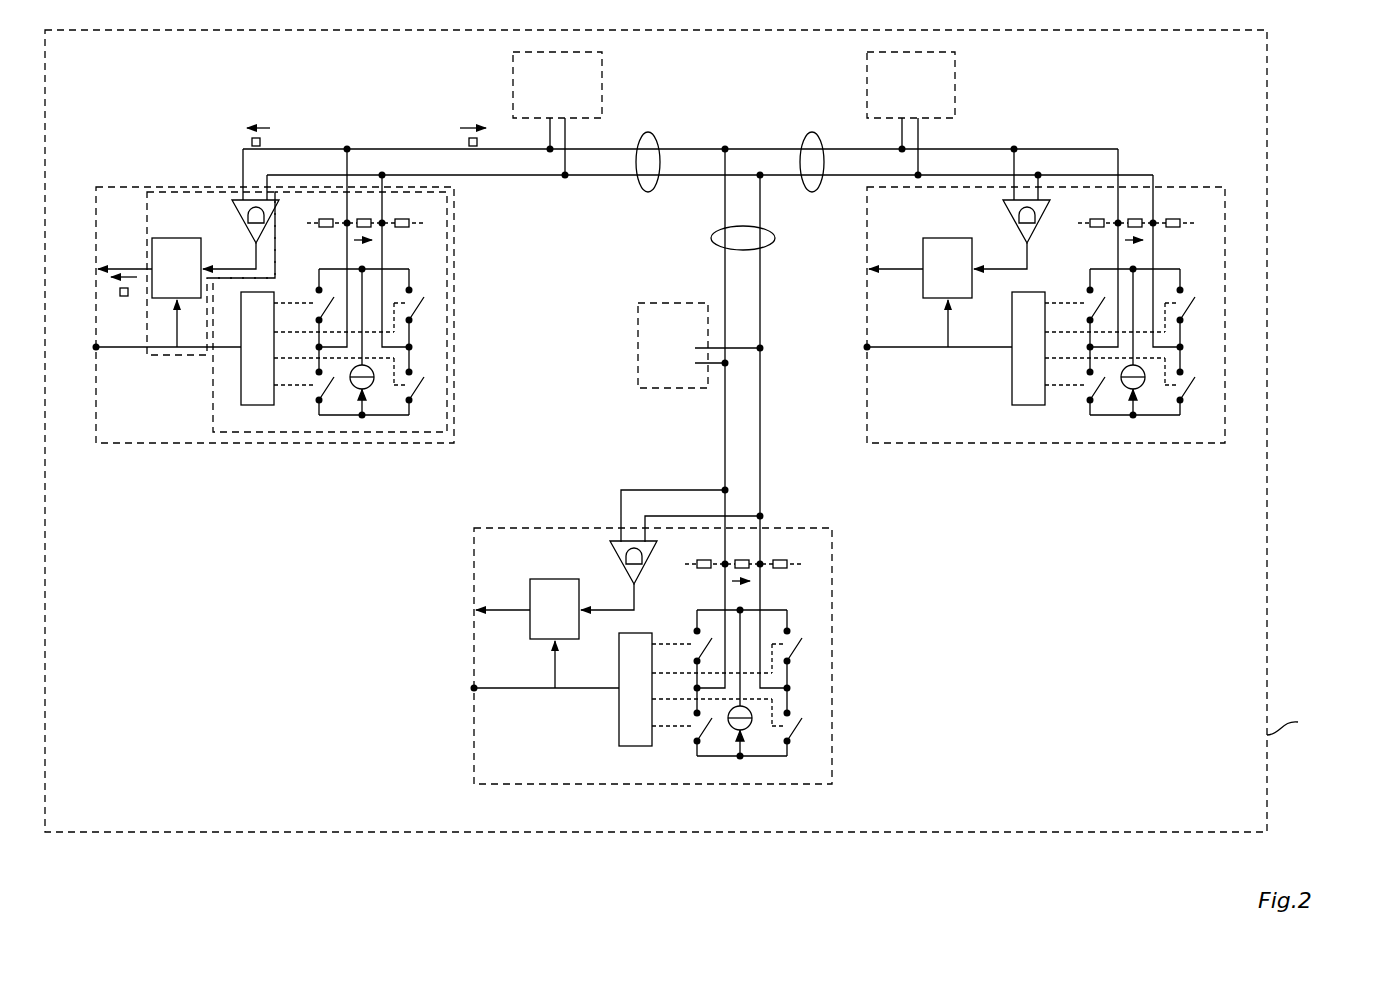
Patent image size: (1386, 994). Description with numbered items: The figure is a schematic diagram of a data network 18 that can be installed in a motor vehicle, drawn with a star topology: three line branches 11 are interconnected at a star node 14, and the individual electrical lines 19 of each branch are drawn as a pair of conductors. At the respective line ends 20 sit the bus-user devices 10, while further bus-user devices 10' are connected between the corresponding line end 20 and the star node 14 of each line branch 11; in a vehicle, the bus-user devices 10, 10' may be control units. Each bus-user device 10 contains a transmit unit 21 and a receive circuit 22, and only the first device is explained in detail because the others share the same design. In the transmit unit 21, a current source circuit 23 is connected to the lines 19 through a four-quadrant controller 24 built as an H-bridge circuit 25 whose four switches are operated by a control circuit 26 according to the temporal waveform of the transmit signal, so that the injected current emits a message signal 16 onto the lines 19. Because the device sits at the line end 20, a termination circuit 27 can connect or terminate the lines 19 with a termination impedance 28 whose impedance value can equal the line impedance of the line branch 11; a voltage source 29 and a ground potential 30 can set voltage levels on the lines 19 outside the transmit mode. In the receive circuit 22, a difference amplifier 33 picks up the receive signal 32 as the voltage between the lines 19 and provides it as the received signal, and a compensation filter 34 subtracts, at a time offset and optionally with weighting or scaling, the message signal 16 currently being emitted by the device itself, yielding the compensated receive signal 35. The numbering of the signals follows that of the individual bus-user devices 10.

The bus-user device 10 is at (639, 463).
The bus-user device 10' is at (769, 225).
The line branch 11 is at (643, 192).
The star node 14 is at (760, 175).
The message signal 16 is at (468, 142).
The data network 18 is at (133, 92).
The electrical line 19 is at (507, 150).
The line end 20 is at (382, 175).
The transmit unit 21 is at (403, 335).
The receive circuit 22 is at (198, 192).
The current source circuit 23 is at (357, 404).
The four-quadrant controller 24 is at (438, 347).
The H-bridge circuit 25 is at (445, 303).
The control circuit 26 is at (241, 380).
The termination circuit 27 is at (406, 230).
The termination impedance 28 is at (356, 229).
The voltage source 29 is at (305, 215).
The ground potential 30 is at (413, 231).
The receive signal 32 is at (252, 141).
The difference amplifier 33 is at (242, 214).
The compensation filter 34 is at (173, 238).
The compensated receive signal 35 is at (120, 293).